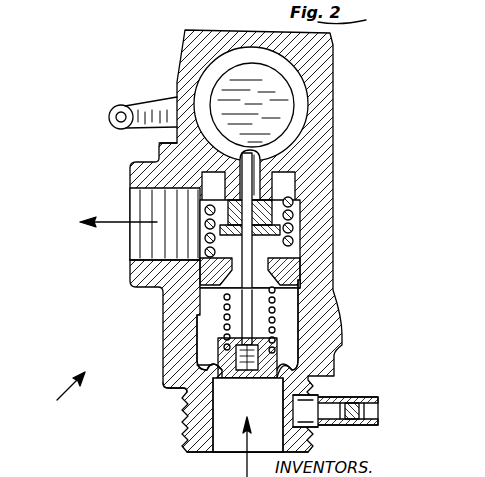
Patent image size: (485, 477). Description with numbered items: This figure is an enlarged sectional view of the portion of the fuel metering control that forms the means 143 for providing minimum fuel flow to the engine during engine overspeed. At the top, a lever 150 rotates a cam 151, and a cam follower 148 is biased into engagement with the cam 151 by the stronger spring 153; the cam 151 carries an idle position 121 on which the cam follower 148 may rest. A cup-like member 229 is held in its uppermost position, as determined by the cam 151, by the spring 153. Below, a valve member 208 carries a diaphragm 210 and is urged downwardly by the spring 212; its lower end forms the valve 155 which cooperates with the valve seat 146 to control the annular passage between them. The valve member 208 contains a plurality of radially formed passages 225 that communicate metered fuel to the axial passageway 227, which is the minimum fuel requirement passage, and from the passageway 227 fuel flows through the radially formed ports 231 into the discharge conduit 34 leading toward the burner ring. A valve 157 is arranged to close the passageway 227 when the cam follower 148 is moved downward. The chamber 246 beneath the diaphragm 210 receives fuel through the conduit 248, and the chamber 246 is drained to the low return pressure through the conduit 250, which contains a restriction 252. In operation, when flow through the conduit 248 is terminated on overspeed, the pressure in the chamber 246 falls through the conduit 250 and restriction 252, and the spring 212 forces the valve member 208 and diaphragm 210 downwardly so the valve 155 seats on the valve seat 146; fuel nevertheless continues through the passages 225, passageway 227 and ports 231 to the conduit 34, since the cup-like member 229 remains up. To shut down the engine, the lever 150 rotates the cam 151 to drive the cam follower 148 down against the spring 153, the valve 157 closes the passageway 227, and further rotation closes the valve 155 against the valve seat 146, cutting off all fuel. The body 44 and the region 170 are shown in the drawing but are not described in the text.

The valve body 44 is at (130, 163).
The discharge conduit 34 is at (118, 222).
The idle position 121 is at (158, 144).
The means for providing minimum fuel flow 143 is at (52, 394).
The valve seat 146 is at (333, 266).
The cam follower 148 is at (333, 140).
The lever 150 is at (143, 104).
The cam 151 is at (333, 130).
The spring 153 is at (333, 190).
The valve 155 is at (333, 238).
The valve 157 is at (205, 237).
The lower chamber 170 is at (335, 300).
The valve member 208 is at (224, 314).
The diaphragm 210 is at (212, 368).
The spring 212 is at (226, 338).
The radially formed passages 225 is at (338, 330).
The axial passageway 227 is at (215, 258).
The cup-like member 229 is at (333, 166).
The radially formed ports 231 is at (333, 215).
The chamber 246 is at (184, 395).
The conduit 248 is at (235, 455).
The conduit 250 is at (372, 400).
The restriction 252 is at (350, 425).